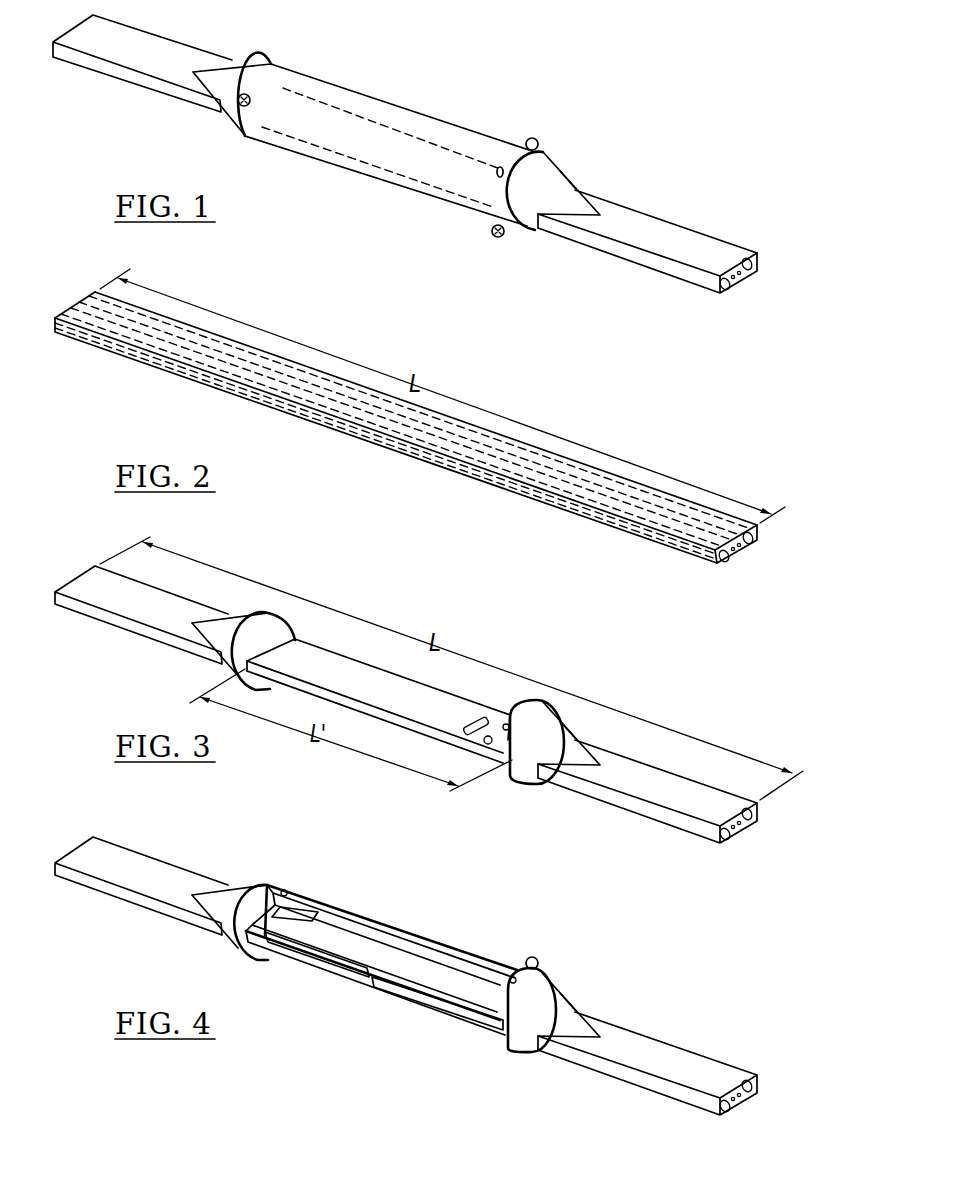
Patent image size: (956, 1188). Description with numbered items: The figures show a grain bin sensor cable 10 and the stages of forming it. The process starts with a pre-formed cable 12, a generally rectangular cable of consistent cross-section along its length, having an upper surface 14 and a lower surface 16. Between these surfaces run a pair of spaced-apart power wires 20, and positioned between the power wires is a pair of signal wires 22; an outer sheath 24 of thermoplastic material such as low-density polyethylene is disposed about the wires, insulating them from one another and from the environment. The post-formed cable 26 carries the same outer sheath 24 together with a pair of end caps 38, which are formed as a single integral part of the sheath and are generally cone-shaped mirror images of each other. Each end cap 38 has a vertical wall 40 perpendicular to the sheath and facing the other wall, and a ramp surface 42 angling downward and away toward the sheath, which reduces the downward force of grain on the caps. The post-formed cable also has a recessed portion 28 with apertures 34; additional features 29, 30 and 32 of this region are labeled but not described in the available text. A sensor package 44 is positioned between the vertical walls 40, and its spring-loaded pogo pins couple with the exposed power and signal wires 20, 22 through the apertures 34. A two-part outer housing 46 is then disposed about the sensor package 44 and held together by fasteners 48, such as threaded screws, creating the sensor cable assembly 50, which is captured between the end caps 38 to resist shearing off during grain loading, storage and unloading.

In FIG. 1, the grain bin sensor cable 10 is at (630, 88).
In FIG. 2, the pre-formed cable 12 is at (387, 453).
In FIG. 1, the upper surface 14 is at (668, 230).
In FIG. 2, the upper surface 14 is at (540, 487).
In FIG. 3, the upper surface 14 is at (683, 784).
In FIG. 4, the upper surface 14 is at (668, 1045).
In FIG. 1, the lower surface 16 is at (635, 265).
In FIG. 2, the lower surface 16 is at (600, 528).
In FIG. 3, the lower surface 16 is at (608, 808).
In FIG. 4, the lower surface 16 is at (630, 1090).
In FIG. 1, the power wires 20 is at (735, 262).
In FIG. 2, the power wires 20 is at (716, 562).
In FIG. 3, the power wires 20 is at (712, 840).
In FIG. 4, the power wires 20 is at (720, 1097).
In FIG. 1, the signal wires 22 is at (738, 281).
In FIG. 2, the signal wires 22 is at (738, 553).
In FIG. 3, the signal wires 22 is at (741, 831).
In FIG. 4, the signal wires 22 is at (737, 1090).
In FIG. 1, the outer sheath 24 is at (605, 212).
In FIG. 2, the outer sheath 24 is at (470, 447).
In FIG. 1, the post-formed cable 26 is at (648, 212).
In FIG. 3, the post-formed cable 26 is at (640, 753).
In FIG. 4, the post-formed cable 26 is at (640, 1022).
In FIG. 3, the recessed portion 28 is at (365, 676).
In FIG. 3, the rail ridge 29 is at (325, 650).
In FIG. 3, the rail upper surface 30 is at (395, 692).
In FIG. 3, the rail lower surface 32 is at (395, 730).
In FIG. 3, the apertures 34 is at (474, 718).
In FIG. 1, the end caps 38 is at (237, 72).
In FIG. 3, the end caps 38 is at (227, 620).
In FIG. 4, the end caps 38 is at (224, 898).
In FIG. 3, the vertical wall 40 is at (280, 629).
In FIG. 4, the vertical wall 40 is at (265, 889).
In FIG. 1, the ramp surface 42 is at (258, 78).
In FIG. 3, the ramp surface 42 is at (250, 625).
In FIG. 4, the ramp surface 42 is at (242, 895).
In FIG. 4, the sensor package 44 is at (318, 942).
In FIG. 1, the two-part outer housing 46 is at (380, 97).
In FIG. 1, the fasteners 48 is at (243, 104).
In FIG. 1, the sensor cable assembly 50 is at (330, 80).